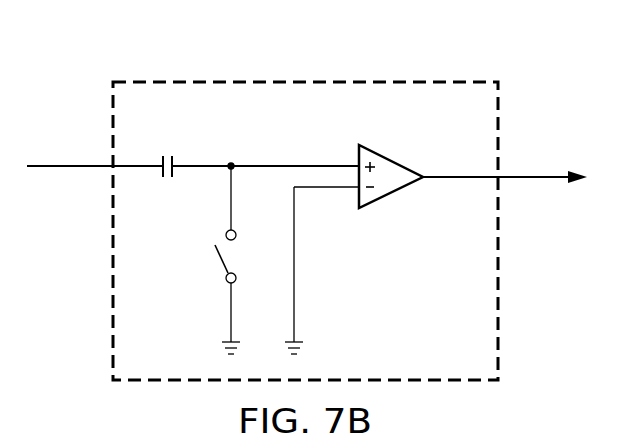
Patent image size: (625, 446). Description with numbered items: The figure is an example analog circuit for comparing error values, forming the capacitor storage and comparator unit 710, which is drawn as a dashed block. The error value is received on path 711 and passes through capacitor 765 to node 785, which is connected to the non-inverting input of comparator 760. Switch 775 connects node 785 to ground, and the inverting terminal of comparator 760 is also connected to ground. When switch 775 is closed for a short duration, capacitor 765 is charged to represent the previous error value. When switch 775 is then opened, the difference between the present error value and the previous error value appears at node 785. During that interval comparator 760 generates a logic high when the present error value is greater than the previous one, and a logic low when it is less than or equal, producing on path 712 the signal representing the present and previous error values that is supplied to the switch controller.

The capacitor storage and comparator unit 710 is at (348, 74).
The path 711 is at (70, 165).
The path 712 is at (530, 176).
The comparator 760 is at (393, 160).
The capacitor 765 is at (165, 153).
The switch 775 is at (216, 258).
The node 785 is at (262, 165).